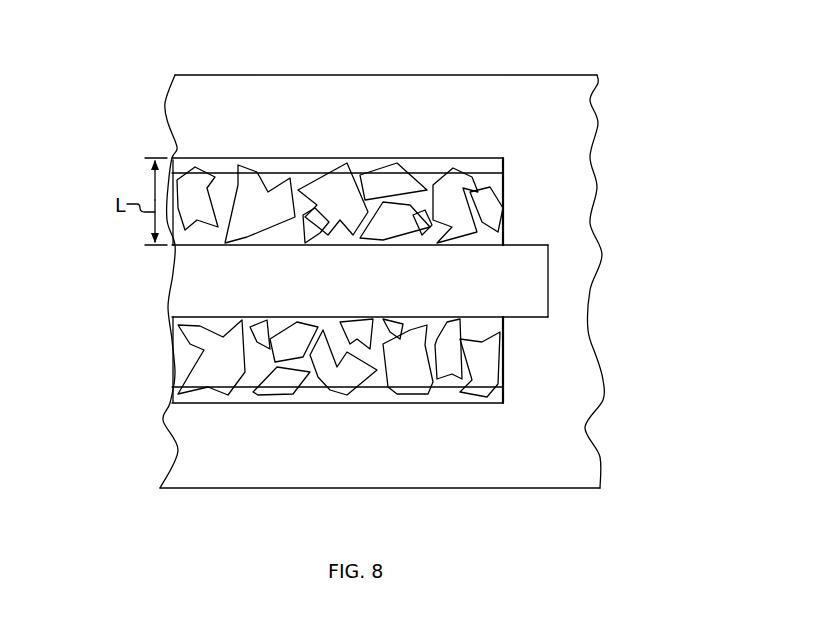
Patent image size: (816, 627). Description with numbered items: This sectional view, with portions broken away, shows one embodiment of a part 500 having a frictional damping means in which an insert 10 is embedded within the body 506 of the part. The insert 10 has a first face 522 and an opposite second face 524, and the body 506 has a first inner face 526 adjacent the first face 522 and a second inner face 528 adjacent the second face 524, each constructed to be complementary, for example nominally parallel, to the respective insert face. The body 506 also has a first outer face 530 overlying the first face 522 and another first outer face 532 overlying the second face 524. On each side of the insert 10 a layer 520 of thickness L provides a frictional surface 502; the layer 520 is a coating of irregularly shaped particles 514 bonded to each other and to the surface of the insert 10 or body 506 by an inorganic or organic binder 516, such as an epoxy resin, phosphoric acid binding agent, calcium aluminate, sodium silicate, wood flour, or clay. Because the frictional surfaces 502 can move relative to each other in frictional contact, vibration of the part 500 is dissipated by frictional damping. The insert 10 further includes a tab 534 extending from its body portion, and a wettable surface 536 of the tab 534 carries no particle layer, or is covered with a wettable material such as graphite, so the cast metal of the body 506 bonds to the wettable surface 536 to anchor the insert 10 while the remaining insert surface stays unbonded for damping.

The insert 10 is at (477, 287).
The part 500 is at (667, 93).
The frictional surface 502 is at (328, 166).
The body 506 is at (183, 110).
The particles 514 is at (405, 172).
The binder 516 is at (218, 182).
The layer 520 is at (199, 163).
The first face 522 is at (172, 268).
The second face 524 is at (220, 322).
The first inner face 526 is at (369, 163).
The second inner face 528 is at (378, 403).
The first outer face 530 is at (465, 75).
The first outer face 532 is at (490, 488).
The tab 534 is at (536, 268).
The wettable surface 536 is at (532, 243).